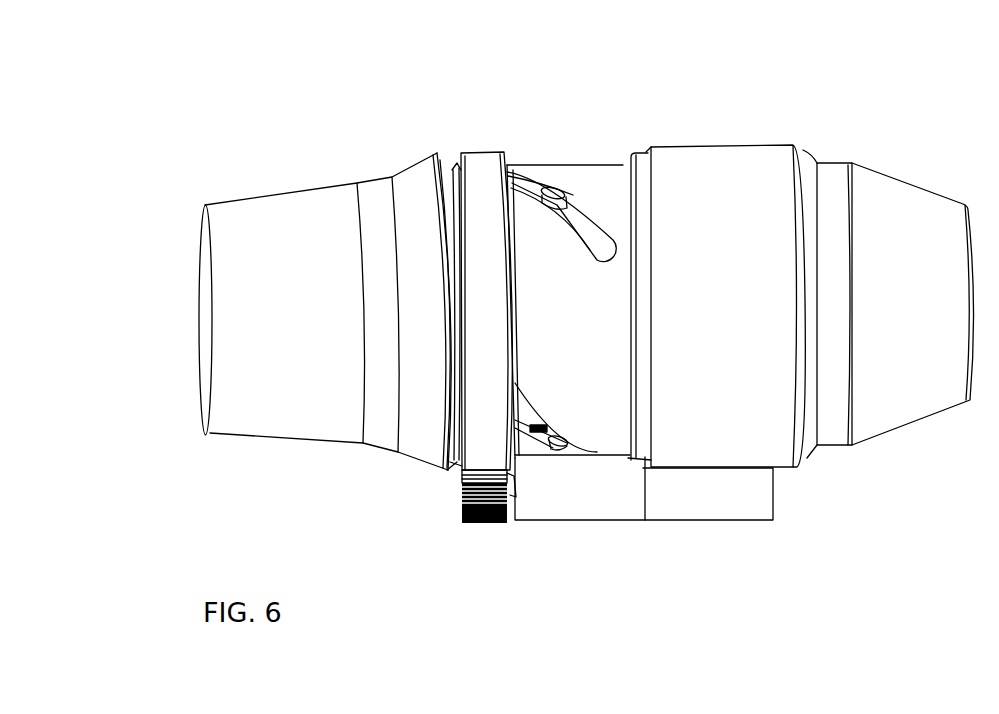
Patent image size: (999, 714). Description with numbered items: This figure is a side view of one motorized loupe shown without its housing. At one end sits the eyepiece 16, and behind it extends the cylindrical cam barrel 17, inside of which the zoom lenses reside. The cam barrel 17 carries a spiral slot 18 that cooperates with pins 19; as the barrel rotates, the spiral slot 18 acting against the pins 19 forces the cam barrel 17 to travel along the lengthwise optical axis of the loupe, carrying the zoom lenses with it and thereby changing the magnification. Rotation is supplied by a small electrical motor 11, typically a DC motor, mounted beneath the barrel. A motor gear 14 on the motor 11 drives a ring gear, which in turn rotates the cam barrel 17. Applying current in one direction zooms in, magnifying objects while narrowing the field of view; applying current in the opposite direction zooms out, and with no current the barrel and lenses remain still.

The electrical motor 11 is at (673, 522).
The motor gear 14 is at (485, 523).
The eyepiece 16 is at (282, 195).
The cam barrel 17 is at (840, 95).
The spiral slot 18 is at (588, 229).
The pins 19 is at (553, 190).